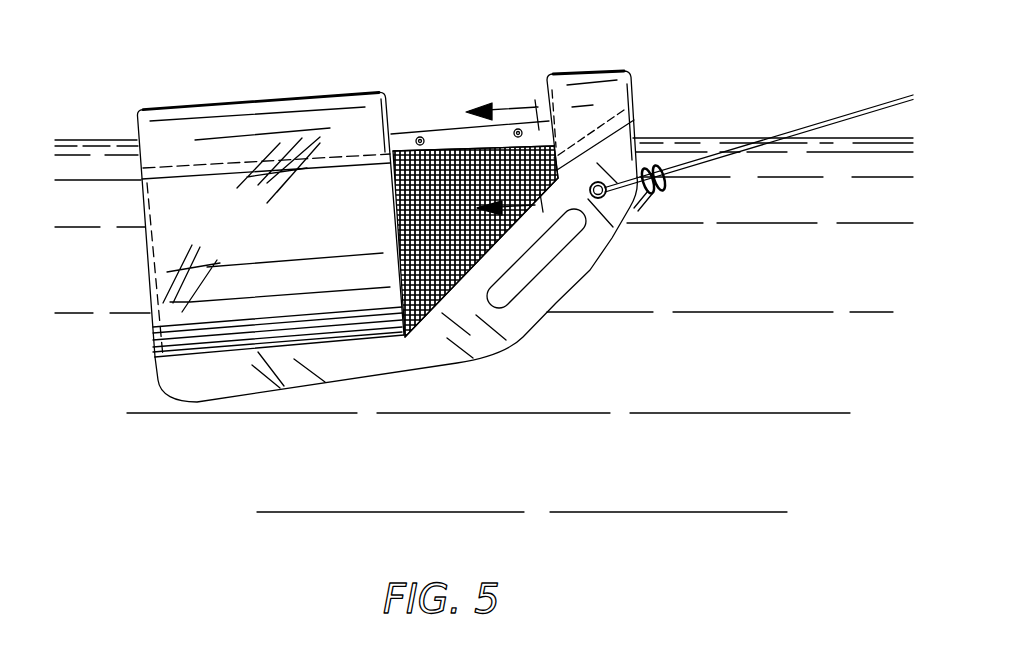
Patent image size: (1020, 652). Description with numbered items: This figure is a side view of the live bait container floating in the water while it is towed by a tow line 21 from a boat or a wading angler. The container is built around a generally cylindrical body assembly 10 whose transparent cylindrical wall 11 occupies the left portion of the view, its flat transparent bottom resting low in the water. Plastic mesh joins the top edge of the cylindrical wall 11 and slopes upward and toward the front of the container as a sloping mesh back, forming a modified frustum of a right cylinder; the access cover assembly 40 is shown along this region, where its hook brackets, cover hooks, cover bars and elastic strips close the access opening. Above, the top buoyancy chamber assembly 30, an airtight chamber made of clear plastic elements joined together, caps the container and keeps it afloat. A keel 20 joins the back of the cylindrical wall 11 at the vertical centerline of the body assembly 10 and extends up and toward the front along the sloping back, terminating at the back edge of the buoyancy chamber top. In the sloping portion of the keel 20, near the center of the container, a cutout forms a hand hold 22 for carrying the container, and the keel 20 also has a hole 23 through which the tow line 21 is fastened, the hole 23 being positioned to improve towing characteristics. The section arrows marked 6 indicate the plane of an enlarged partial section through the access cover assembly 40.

The cylindrical body assembly 10 is at (143, 237).
The transparent cylindrical wall 11 is at (287, 98).
The keel 20 is at (503, 352).
The tow line 21 is at (782, 129).
The hand hold 22 is at (567, 250).
The hole 23 is at (570, 185).
The top buoyancy chamber assembly 30 is at (634, 82).
The access cover assembly 40 is at (412, 127).
The section line 6- 6 is at (486, 164).